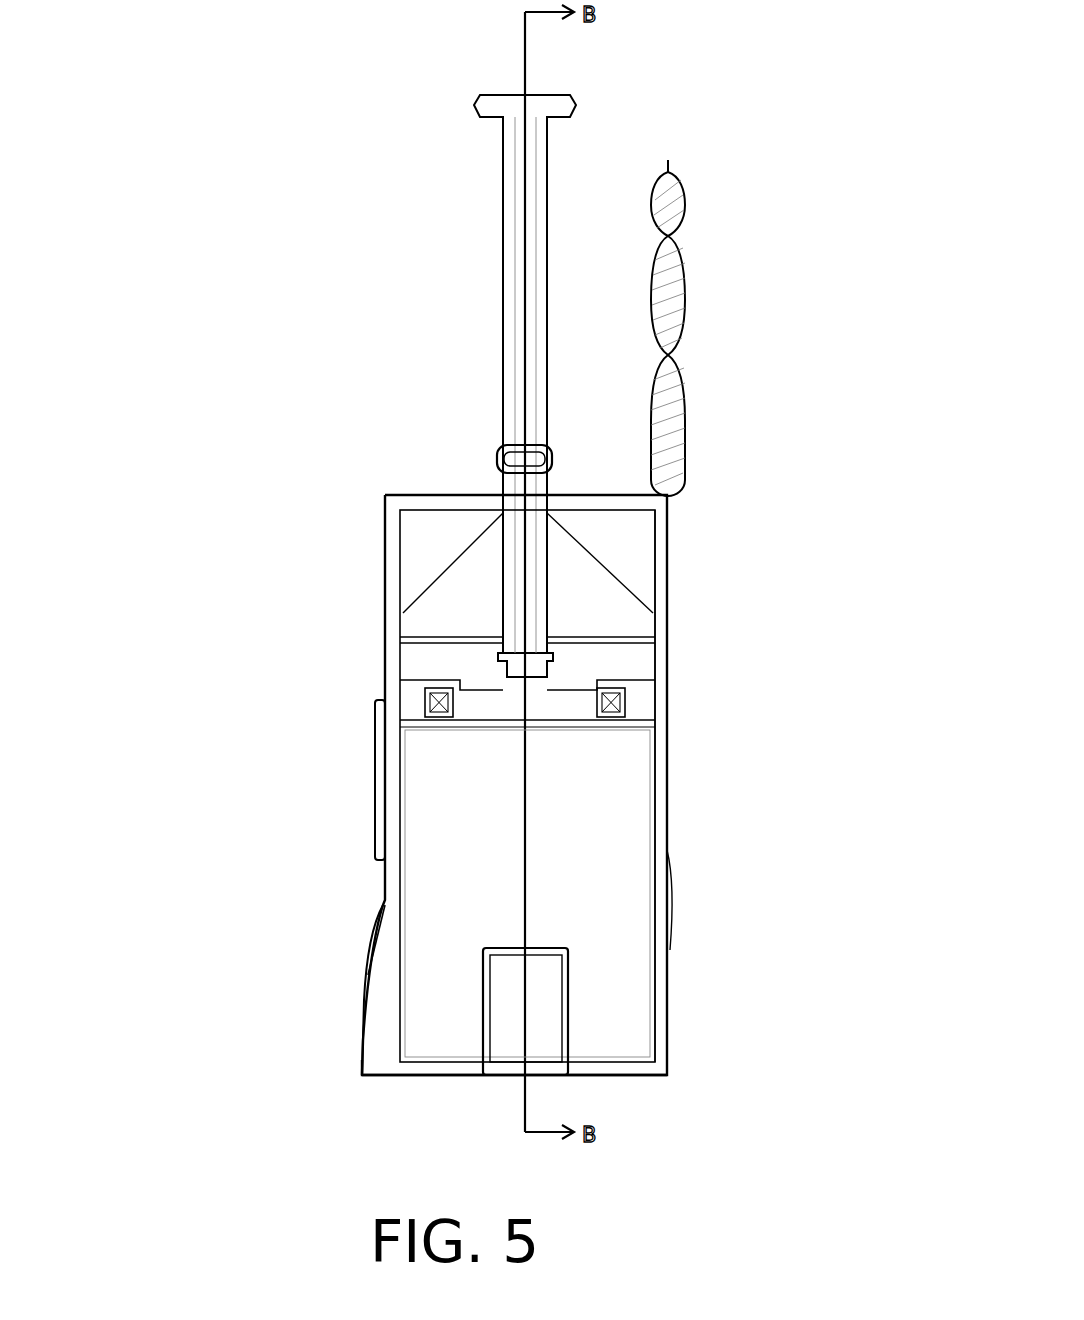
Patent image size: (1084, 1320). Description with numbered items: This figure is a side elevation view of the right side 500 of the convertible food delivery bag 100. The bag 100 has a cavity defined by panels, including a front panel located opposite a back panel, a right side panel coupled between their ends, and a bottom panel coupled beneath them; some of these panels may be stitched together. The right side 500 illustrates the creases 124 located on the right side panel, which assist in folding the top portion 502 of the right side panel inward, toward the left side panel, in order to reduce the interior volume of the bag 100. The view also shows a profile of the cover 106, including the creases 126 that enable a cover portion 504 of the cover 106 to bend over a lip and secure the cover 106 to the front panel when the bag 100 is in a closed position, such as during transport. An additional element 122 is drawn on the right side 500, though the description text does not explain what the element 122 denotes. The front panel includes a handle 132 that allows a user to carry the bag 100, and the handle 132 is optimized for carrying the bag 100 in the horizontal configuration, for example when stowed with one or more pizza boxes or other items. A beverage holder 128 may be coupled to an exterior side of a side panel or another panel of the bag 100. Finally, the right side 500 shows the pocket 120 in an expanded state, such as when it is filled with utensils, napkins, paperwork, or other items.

The right side 500 is at (243, 56).
The bag 100 is at (335, 474).
The top portion 502 is at (424, 460).
The cover portion 504 is at (762, 165).
The cover 106 is at (745, 328).
The creases 126 is at (754, 259).
The plunger 122 is at (475, 386).
The creases 124 is at (556, 578).
The handle 132 is at (296, 780).
The beverage holder 128 is at (394, 1011).
The pocket 120 is at (290, 990).